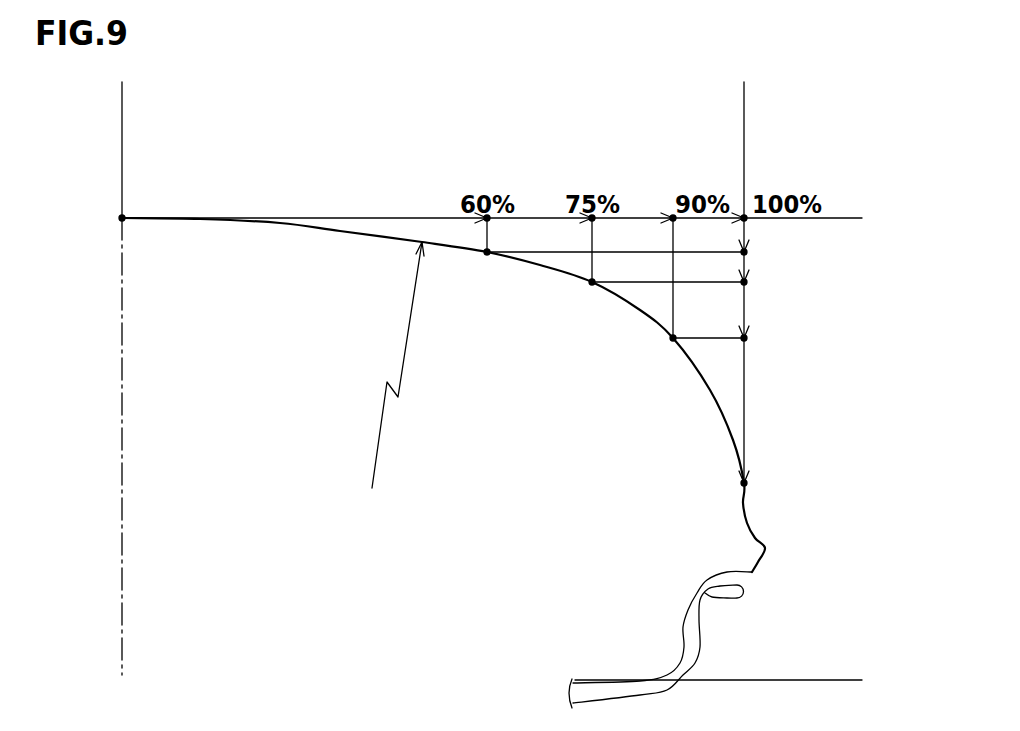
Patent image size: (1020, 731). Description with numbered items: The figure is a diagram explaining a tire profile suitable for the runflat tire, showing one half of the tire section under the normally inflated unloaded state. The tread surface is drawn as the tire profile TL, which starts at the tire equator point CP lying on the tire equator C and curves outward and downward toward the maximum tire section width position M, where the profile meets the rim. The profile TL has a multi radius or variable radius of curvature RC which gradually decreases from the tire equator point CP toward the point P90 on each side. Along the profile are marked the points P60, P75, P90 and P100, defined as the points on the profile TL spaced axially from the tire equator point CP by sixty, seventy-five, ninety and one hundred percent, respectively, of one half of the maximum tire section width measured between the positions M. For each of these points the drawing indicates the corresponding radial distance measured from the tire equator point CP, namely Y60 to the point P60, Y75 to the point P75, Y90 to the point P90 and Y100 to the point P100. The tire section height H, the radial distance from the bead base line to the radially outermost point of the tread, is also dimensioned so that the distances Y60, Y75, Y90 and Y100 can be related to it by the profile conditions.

The tire equator point CP is at (120, 218).
The tire profile TL is at (276, 216).
The radius of curvature RC is at (405, 357).
The tire equator C is at (122, 453).
The maximum tire section width position M is at (746, 490).
The tire section height H is at (857, 218).
The point P60 is at (487, 251).
The point P75 is at (578, 267).
The point P90 is at (633, 295).
The point P100 is at (711, 484).
The radial distance Y60 is at (646, 253).
The radial distance Y75 is at (699, 283).
The radial distance Y90 is at (739, 340).
The radial distance Y100 is at (776, 484).